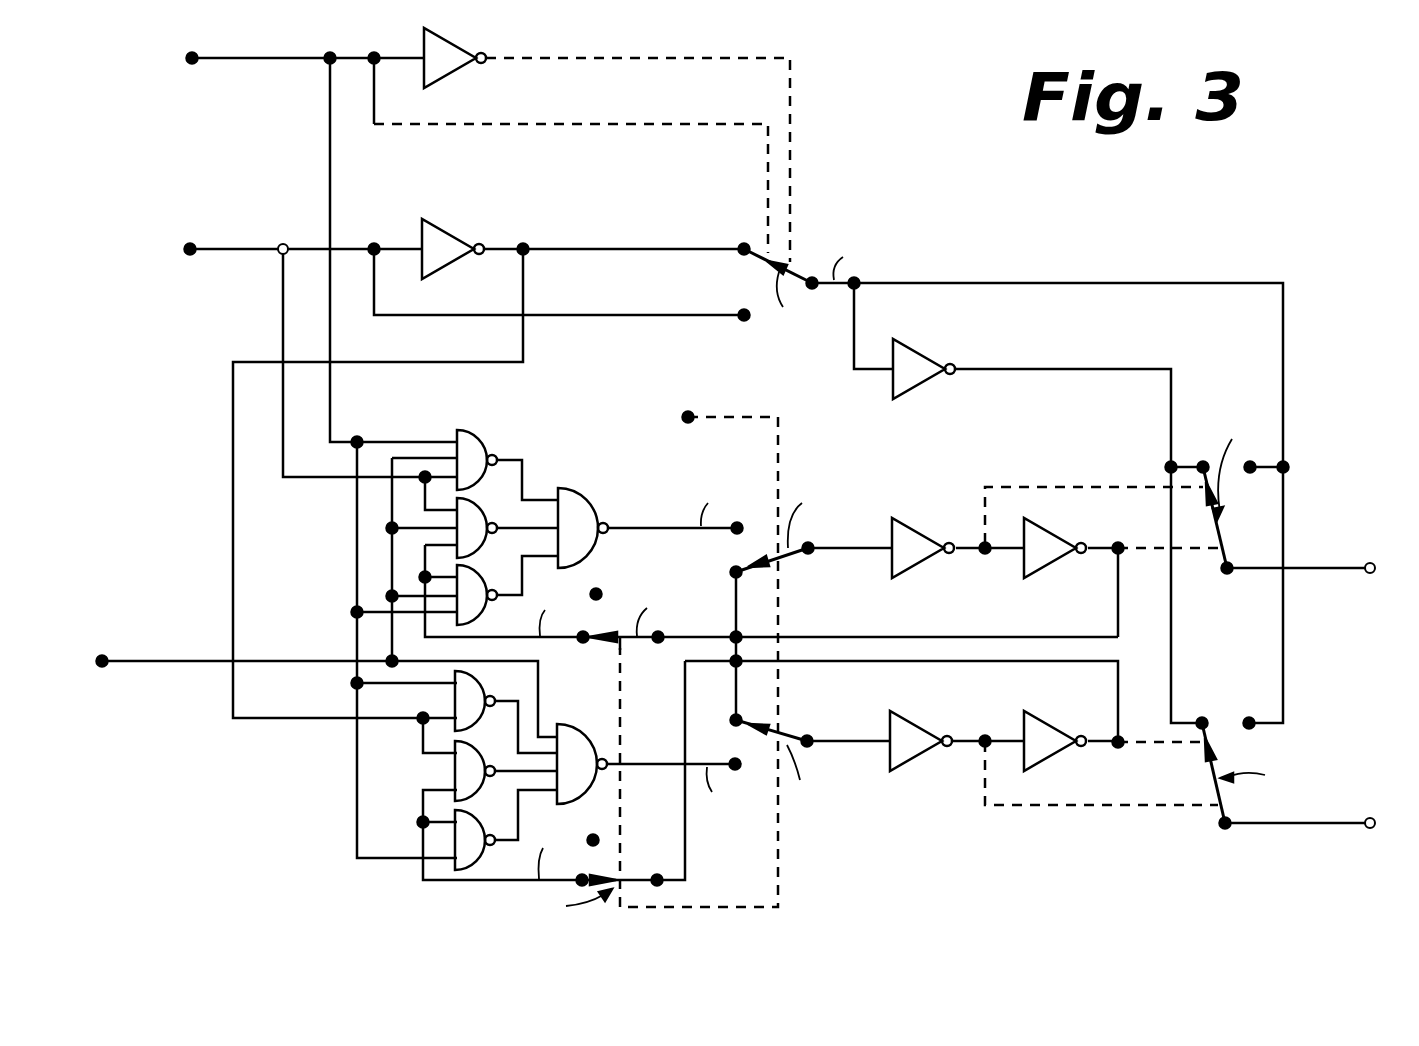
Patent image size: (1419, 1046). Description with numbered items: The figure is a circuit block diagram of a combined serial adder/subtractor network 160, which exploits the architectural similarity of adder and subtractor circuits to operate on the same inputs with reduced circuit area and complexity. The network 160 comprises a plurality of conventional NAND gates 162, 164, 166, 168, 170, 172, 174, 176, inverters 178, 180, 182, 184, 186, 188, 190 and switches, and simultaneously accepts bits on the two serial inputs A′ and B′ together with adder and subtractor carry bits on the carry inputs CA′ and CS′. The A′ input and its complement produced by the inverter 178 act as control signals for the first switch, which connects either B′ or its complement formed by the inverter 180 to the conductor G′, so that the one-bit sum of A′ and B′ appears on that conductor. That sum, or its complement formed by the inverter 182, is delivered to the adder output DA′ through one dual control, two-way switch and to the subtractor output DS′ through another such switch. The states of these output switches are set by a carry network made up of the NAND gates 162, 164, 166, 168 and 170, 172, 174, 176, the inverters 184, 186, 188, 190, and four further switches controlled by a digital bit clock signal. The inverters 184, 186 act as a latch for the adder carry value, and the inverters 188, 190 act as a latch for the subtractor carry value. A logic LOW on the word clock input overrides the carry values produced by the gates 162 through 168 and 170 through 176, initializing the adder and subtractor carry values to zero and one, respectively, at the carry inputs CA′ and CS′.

The combined serial adder/subtractor network 160 is at (878, 170).
The NAND gate 162 is at (479, 437).
The NAND gate 164 is at (481, 506).
The NAND gate 166 is at (481, 572).
The NAND gate 168 is at (584, 498).
The NAND gate 170 is at (490, 673).
The NAND gate 172 is at (476, 750).
The NAND gate 174 is at (476, 820).
The NAND gate 176 is at (581, 722).
The inverter 178 is at (452, 78).
The inverter 180 is at (448, 270).
The inverter 182 is at (922, 393).
The inverter 184 is at (918, 572).
The inverter 186 is at (1052, 572).
The inverter 188 is at (915, 764).
The inverter 190 is at (1052, 763).